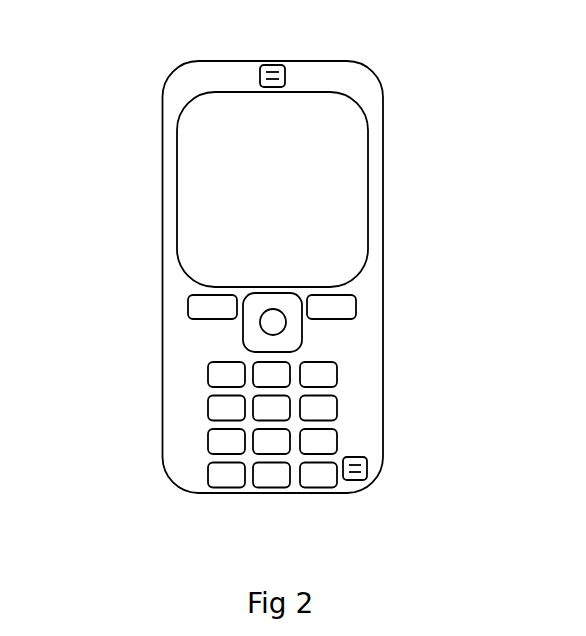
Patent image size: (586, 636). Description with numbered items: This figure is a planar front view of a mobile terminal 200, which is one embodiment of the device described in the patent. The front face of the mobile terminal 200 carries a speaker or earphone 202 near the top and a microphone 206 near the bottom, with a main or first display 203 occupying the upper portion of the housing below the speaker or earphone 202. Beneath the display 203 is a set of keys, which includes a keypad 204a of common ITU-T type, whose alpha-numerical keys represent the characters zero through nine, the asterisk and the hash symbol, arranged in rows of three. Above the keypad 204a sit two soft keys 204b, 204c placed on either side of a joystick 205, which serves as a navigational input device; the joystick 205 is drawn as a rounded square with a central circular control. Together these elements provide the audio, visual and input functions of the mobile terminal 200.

The mobile terminal 200 is at (150, 117).
The speaker or earphone 202 is at (268, 65).
The main or first display 203 is at (365, 178).
The keypad 204a is at (208, 476).
The soft key 204b is at (188, 309).
The soft key 204c is at (356, 312).
The joystick 205 is at (302, 330).
The microphone 206 is at (366, 478).